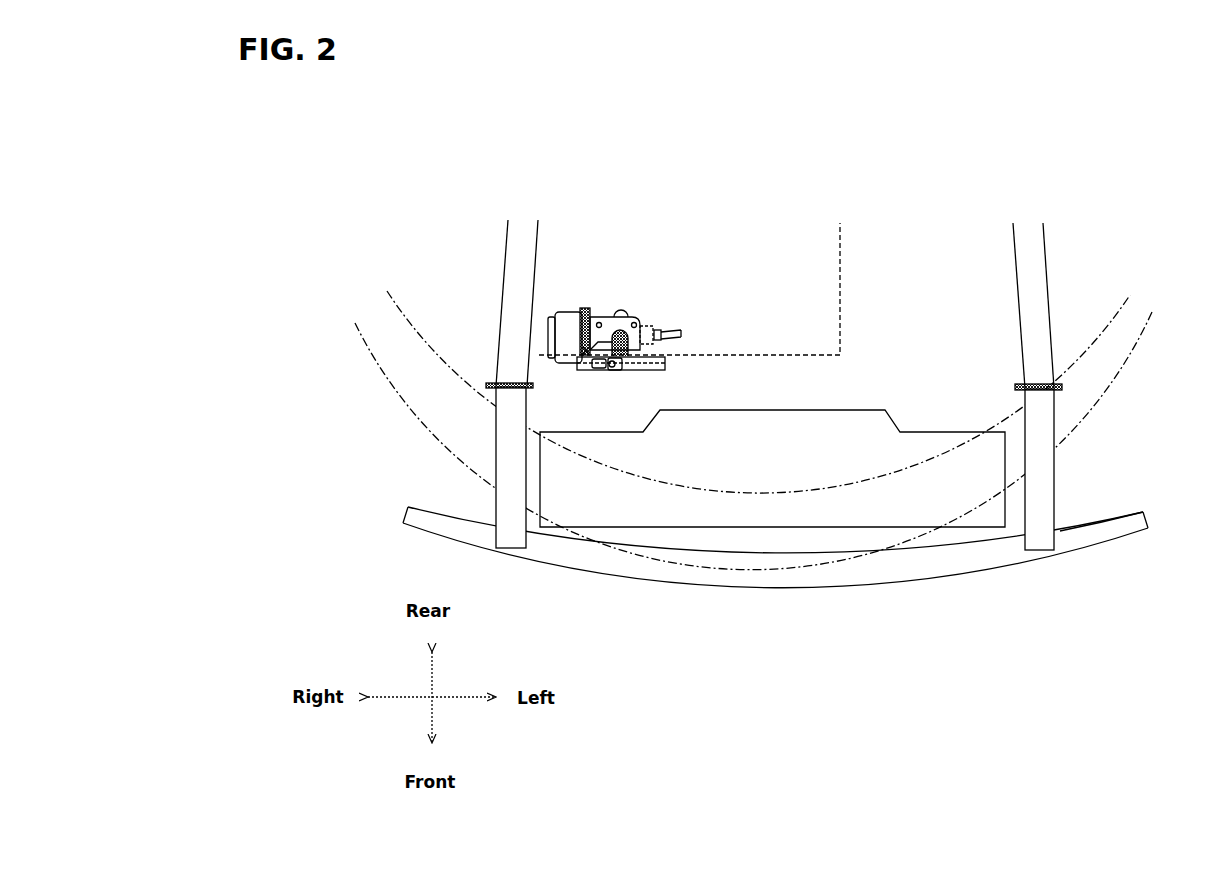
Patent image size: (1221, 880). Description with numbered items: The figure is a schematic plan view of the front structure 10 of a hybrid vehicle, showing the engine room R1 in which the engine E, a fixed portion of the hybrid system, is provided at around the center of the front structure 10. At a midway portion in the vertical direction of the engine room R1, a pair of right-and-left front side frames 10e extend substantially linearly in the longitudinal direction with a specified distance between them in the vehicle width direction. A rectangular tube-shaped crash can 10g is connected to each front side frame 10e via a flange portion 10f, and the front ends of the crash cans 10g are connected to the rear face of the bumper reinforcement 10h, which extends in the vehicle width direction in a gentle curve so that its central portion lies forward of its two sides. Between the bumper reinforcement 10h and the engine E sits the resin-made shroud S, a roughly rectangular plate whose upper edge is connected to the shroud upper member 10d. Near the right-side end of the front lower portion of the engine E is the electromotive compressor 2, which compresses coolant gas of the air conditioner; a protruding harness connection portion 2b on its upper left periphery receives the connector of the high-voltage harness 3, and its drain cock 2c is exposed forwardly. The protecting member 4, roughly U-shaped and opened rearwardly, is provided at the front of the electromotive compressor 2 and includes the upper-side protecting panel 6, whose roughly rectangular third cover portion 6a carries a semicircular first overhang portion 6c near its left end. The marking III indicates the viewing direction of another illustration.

The electromotive compressor 2 is at (572, 309).
The harness connection portion 2b is at (646, 325).
The drain cock 2c is at (612, 371).
The high-voltage harness 3 is at (677, 331).
The protecting member 4 is at (588, 378).
The upper-side protecting panel 6 is at (597, 311).
The third cover portion 6a is at (609, 316).
The first overhang portion 6c is at (624, 334).
The front structure 10 is at (775, 422).
The shroud upper member 10d is at (786, 567).
The front side frames 10e is at (508, 256).
The flange portion 10f is at (487, 381).
The crash can 10g is at (498, 458).
The bumper reinforcement 10h is at (1098, 545).
The engine E is at (840, 240).
The engine room R1 is at (890, 305).
The shroud S is at (908, 528).
The section line III is at (669, 373).